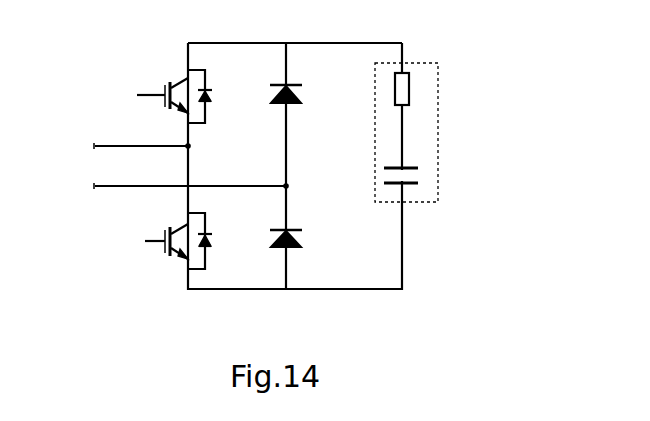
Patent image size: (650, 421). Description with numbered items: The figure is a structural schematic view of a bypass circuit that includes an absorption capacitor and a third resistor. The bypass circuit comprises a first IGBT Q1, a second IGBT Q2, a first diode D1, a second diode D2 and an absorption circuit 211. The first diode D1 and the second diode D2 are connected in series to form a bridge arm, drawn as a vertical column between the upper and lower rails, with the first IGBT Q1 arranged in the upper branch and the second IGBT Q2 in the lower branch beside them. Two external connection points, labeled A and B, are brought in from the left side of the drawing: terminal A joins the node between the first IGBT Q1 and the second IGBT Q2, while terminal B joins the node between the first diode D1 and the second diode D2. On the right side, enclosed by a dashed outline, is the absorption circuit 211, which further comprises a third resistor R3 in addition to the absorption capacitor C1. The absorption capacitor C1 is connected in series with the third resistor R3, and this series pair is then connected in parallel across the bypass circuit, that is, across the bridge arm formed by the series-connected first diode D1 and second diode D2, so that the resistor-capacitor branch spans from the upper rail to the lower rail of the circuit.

The first IGBT Q1 is at (165, 86).
The second IGBT Q2 is at (178, 265).
The first diode D1 is at (305, 93).
The second diode D2 is at (300, 245).
The third resistor R3 is at (413, 89).
The absorption capacitor C1 is at (408, 164).
The absorption circuit 211 is at (422, 157).
The terminal A is at (75, 141).
The terminal B is at (75, 188).